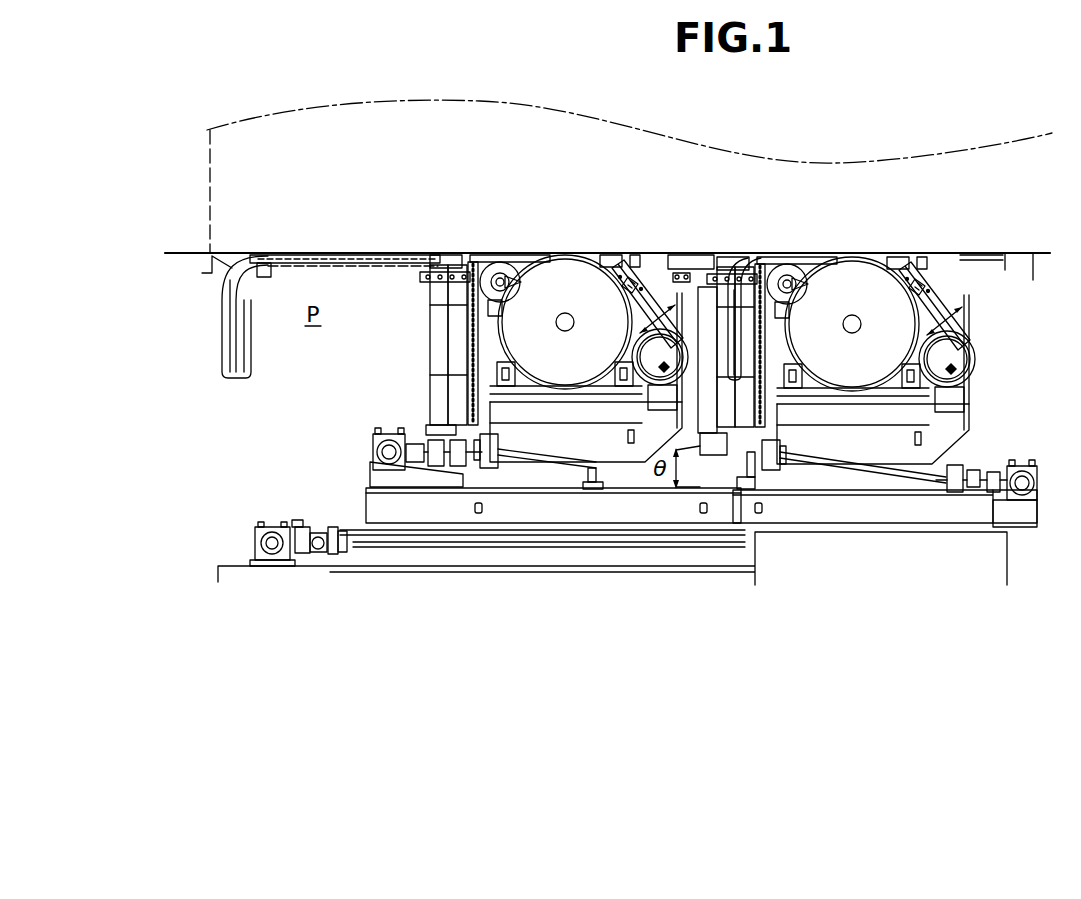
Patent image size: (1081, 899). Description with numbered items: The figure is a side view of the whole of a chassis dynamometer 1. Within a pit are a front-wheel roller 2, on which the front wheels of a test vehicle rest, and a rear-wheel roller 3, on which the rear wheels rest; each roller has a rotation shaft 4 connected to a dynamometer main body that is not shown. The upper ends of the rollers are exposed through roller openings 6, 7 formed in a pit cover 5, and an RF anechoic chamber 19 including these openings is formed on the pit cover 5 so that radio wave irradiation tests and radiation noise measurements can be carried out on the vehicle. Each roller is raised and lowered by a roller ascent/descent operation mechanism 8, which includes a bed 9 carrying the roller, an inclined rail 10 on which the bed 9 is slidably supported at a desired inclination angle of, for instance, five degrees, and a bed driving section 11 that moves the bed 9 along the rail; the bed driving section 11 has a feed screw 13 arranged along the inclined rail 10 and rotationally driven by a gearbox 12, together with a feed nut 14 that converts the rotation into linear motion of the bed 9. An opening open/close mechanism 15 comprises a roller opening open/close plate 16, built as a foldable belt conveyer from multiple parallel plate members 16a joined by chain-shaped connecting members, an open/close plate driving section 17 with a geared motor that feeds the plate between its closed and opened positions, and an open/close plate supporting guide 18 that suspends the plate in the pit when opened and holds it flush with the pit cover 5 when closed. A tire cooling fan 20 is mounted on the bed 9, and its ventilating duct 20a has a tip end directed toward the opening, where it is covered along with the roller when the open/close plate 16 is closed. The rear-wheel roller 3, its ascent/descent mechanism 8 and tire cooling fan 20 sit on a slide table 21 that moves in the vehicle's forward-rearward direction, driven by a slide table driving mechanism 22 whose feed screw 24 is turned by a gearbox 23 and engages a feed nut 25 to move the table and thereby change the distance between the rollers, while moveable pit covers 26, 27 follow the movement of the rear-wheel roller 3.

The chassis dynamometer 1 is at (370, 376).
The front-wheel roller 2 is at (858, 318).
The rear-wheel roller 3 is at (600, 260).
The rotation shaft 4 is at (628, 258).
The pit cover 5 is at (977, 251).
The roller opening 6 is at (866, 292).
The roller opening 7 is at (583, 284).
The roller ascent/descent operation mechanism 8 is at (710, 496).
The bed 9 is at (610, 440).
The inclined rail 10 is at (557, 478).
The bed driving section 11 is at (712, 534).
The gearbox 12 is at (395, 470).
The feed screw 13 is at (532, 470).
The feed nut 14 is at (489, 470).
The opening open/close mechanism 15 is at (408, 165).
The roller opening open/close plate 16 is at (468, 283).
The plate member 16a is at (467, 360).
The open/close plate driving section 17 is at (488, 270).
The open/close plate supporting guide 18 is at (513, 262).
The RF anechoic chamber 19 is at (232, 158).
The tire cooling fan 20 is at (664, 346).
The ventilating duct 20a is at (653, 327).
The slide table 21 is at (383, 549).
The slide table driving mechanism 22 is at (295, 591).
The gearbox 23 is at (272, 547).
The feed screw 24 is at (340, 576).
The feed nut 25 is at (330, 553).
The moveable pit cover 26 is at (318, 250).
The moveable pit cover 27 is at (742, 258).